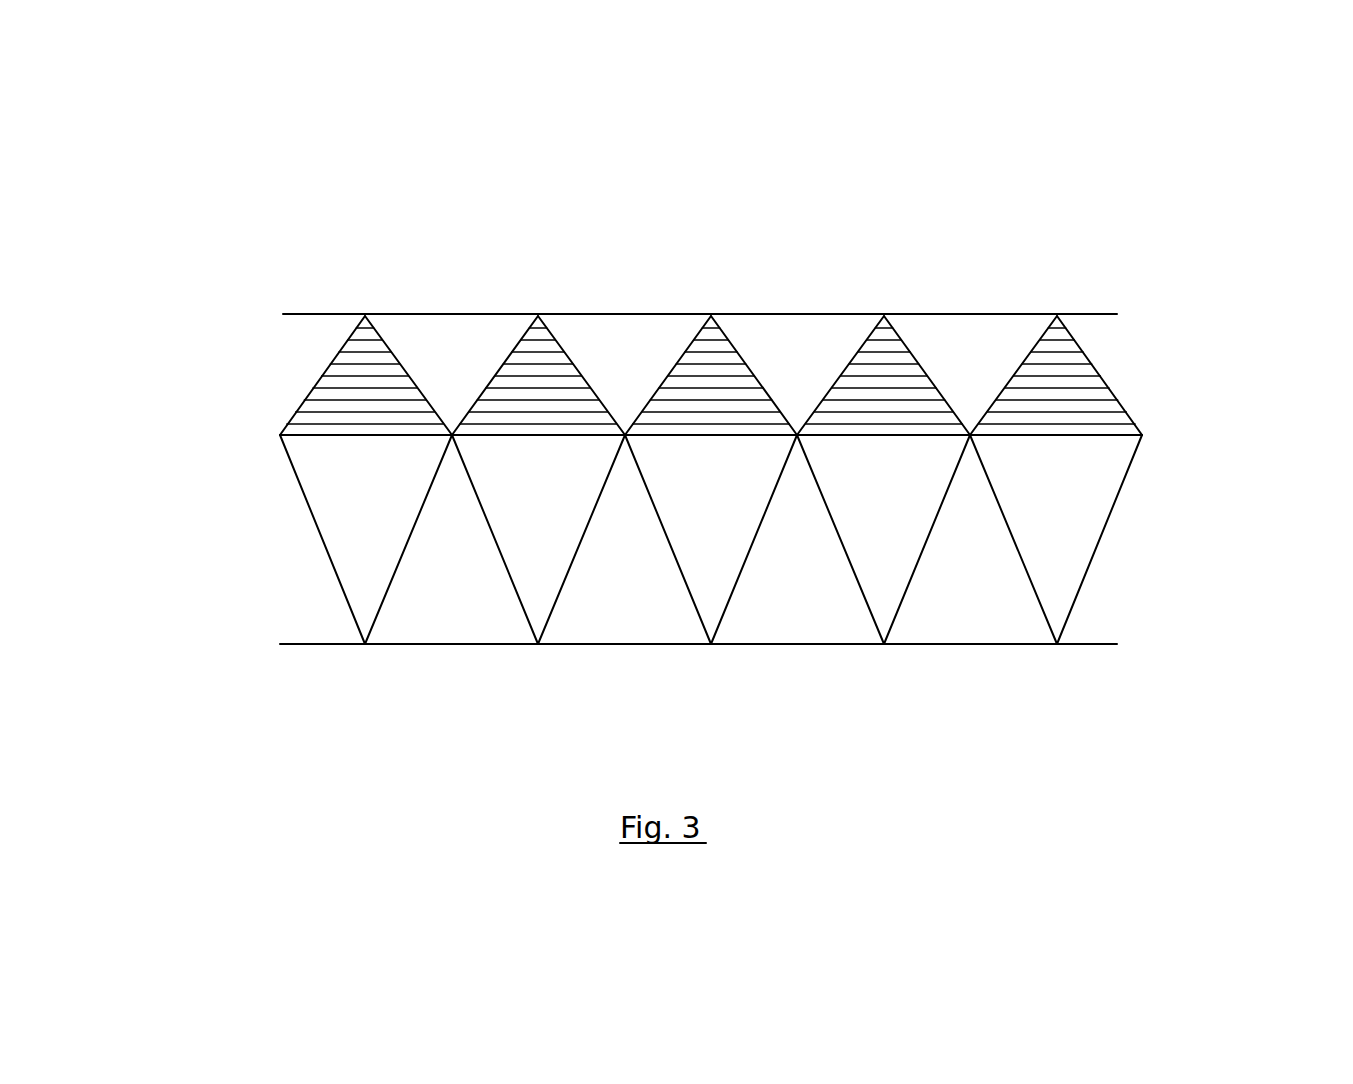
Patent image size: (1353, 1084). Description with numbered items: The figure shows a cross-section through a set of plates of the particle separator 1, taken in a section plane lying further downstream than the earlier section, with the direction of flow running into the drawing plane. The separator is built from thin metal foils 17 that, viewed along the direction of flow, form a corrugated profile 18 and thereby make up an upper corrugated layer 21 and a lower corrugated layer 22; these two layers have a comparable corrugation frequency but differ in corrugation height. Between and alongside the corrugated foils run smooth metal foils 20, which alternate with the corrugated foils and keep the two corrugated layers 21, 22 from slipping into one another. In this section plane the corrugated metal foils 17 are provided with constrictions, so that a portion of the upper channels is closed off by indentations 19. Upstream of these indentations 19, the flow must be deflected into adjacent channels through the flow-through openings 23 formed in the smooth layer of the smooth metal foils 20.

The particle separator 1 is at (1260, 456).
The metal foils 17 is at (407, 383).
The corrugated profile 18 is at (1120, 347).
The indentations 19 is at (537, 380).
The smooth metal foil 20 is at (986, 312).
The corrugated layer 21 is at (225, 393).
The corrugated layer 22 is at (248, 545).
The flow-through openings 23 is at (1057, 437).